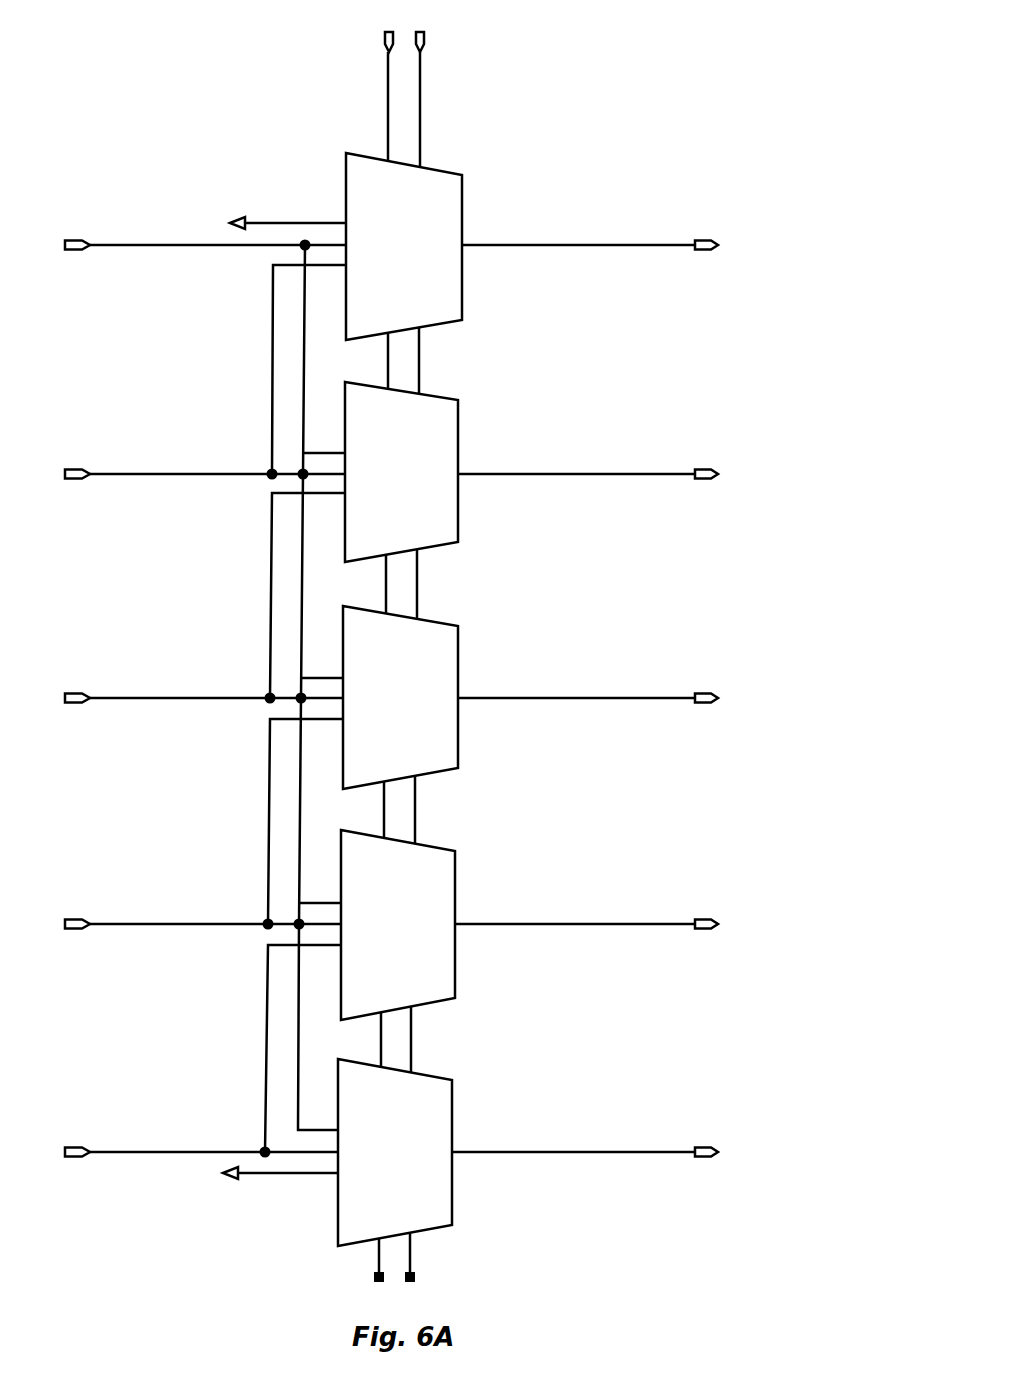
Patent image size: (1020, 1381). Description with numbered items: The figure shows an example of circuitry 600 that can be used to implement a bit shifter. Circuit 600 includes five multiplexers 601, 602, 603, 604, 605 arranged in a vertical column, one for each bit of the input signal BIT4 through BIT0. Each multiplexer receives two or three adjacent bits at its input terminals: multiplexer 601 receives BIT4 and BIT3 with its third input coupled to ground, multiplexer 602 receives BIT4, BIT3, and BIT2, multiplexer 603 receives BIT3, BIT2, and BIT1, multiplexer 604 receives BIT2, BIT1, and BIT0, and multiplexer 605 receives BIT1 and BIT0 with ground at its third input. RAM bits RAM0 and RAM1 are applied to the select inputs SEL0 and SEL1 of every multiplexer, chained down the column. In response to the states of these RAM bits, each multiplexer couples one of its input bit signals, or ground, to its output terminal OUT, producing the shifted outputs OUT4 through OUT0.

The circuitry 600 is at (705, 57).
The multiplexer 601 is at (448, 171).
The multiplexer 602 is at (444, 400).
The multiplexer 603 is at (444, 624).
The multiplexer 604 is at (441, 848).
The multiplexer 605 is at (438, 1077).